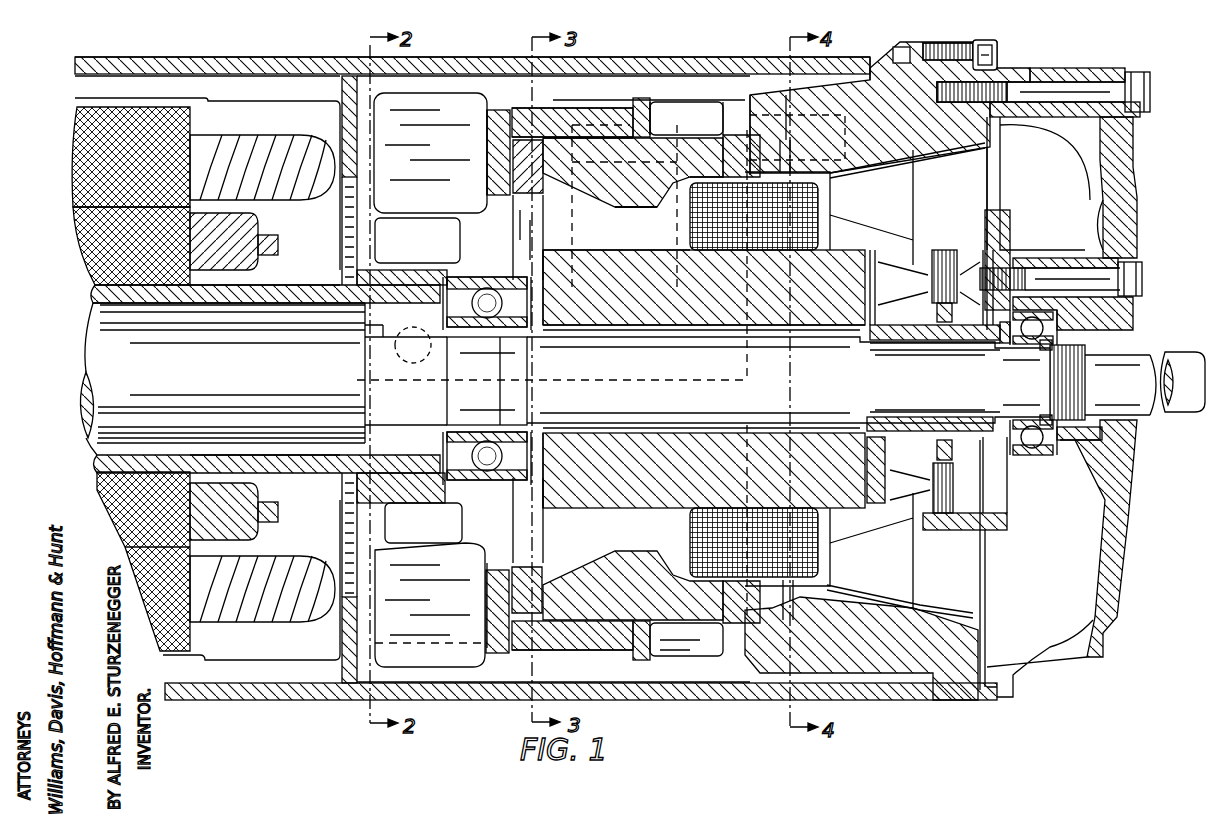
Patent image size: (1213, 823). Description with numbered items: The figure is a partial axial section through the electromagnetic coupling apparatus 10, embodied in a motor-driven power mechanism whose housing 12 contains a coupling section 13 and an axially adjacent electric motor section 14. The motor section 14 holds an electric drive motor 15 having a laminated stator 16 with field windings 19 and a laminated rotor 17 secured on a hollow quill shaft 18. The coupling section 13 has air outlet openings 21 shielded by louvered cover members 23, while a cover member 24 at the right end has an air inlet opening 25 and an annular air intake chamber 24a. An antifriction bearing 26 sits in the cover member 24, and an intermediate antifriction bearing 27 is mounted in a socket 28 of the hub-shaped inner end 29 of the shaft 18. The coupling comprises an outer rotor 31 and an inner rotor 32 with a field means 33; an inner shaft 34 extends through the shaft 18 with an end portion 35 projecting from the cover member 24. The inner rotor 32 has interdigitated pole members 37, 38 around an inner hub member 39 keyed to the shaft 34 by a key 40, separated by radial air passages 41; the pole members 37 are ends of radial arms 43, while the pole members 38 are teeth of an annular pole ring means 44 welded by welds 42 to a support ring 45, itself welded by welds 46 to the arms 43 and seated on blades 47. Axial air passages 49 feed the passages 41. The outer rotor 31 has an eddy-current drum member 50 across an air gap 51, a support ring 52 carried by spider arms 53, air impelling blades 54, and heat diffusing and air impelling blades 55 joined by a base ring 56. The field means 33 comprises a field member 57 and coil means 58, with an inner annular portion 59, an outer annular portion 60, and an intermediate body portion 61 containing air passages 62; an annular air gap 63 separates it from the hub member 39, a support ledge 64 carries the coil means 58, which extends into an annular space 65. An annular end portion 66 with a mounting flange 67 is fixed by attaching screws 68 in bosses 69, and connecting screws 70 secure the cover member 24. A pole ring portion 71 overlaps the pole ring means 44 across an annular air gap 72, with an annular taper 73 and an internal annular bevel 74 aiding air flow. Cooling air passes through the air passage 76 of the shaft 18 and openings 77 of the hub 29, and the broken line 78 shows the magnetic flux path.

The electromagnetic coupling apparatus 10 is at (600, 105).
The housing 12 is at (262, 58).
The coupling section 13 is at (660, 98).
The electric motor section 14 is at (146, 60).
The electric drive motor 15 is at (175, 98).
The stator 16 is at (82, 105).
The rotor 17 is at (85, 248).
The shaft 18 is at (278, 280).
The field windings 19 is at (255, 145).
The air outlet openings 21 is at (462, 700).
The louvered cover members 23 is at (355, 690).
The cover member 24 is at (1122, 190).
The annular air intake chamber 24a is at (1085, 215).
The air inlet opening 25 is at (1057, 655).
The antifriction bearing 26 is at (1033, 450).
The intermediate antifriction bearing 27 is at (478, 288).
The socket 28 is at (478, 482).
The hub-shaped inner end 29 is at (372, 262).
The outer rotor 31 is at (530, 107).
The inner rotor 32 is at (619, 219).
The field means 33 is at (880, 95).
The shaft 34 is at (668, 425).
The end portion 35 is at (1180, 415).
The pole members 37 is at (610, 651).
The pole members 38 is at (590, 107).
The inner hub member 39 is at (610, 330).
The key 40 is at (690, 325).
The radial air passages 41 is at (640, 178).
The welds 42 is at (528, 140).
The radial arms 43 is at (690, 210).
The annular pole ring means 44 is at (745, 115).
The support ring 45 is at (487, 160).
The welds 46 is at (545, 580).
The blades 47 is at (525, 215).
The axial air passages 49 is at (565, 250).
The eddy-current drum member 50 is at (650, 100).
The air gap 51 is at (588, 151).
The support ring 52 is at (487, 140).
The spider arms 53 is at (355, 268).
The air impelling blades 54 is at (420, 92).
The heat diffusing and air impelling blades 55 is at (715, 100).
The base ring 56 is at (686, 379).
The field member 57 is at (822, 176).
The coil means 58 is at (826, 210).
The inner annular portion 59 is at (835, 255).
The outer annular portion 60 is at (848, 95).
The intermediate body portion 61 is at (925, 158).
The air passages 62 is at (905, 212).
The annular air gap 63 is at (815, 508).
The support ledge 64 is at (770, 262).
The annular space 65 is at (705, 170).
The annular end portion 66 is at (985, 135).
The mounting flange 67 is at (985, 40).
The attaching screws 68 is at (997, 50).
The bosses 69 is at (960, 45).
The connecting screws 70 is at (1065, 85).
The pole ring portion 71 is at (786, 95).
The annular air gap 72 is at (770, 130).
The annular taper 73 is at (750, 95).
The internal annular bevel 74 is at (780, 165).
The air passage 76 is at (90, 325).
The openings 77 is at (412, 335).
The broken line 78 is at (616, 265).